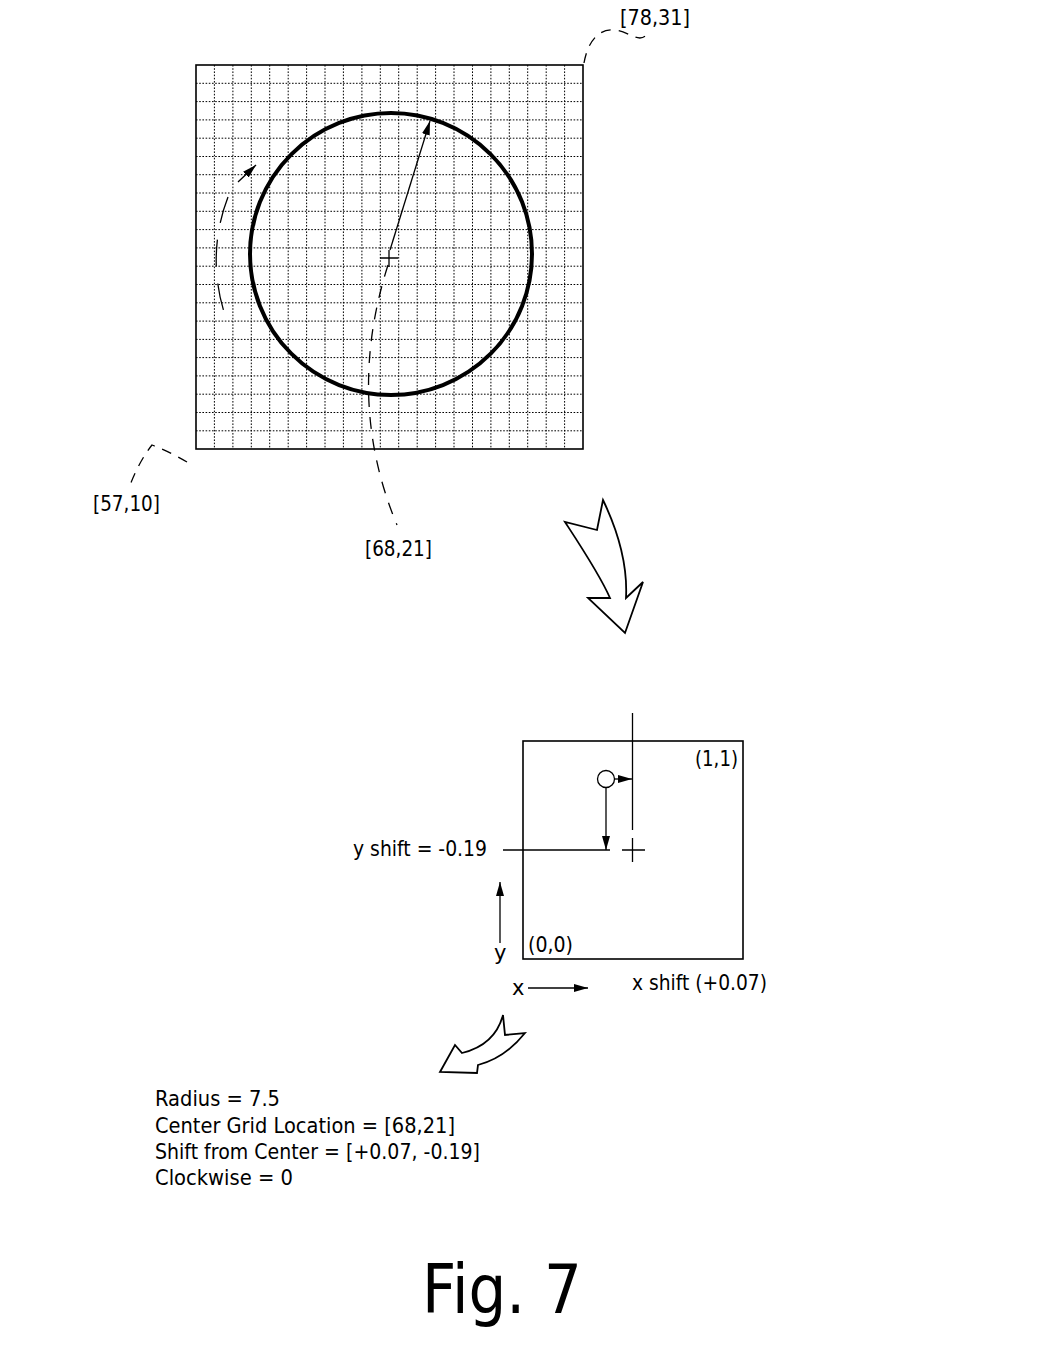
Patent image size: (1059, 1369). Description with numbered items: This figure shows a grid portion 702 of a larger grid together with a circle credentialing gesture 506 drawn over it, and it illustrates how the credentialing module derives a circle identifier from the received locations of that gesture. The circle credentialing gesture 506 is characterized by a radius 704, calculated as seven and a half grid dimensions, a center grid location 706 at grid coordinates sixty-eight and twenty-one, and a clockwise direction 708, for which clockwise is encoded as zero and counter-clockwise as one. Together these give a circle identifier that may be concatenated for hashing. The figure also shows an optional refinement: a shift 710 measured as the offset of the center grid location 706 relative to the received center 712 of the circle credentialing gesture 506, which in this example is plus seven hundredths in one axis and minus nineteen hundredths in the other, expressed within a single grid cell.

The circle credentialing gesture 506 is at (473, 239).
The grid portion 702 is at (456, 257).
The radius 704 is at (280, 128).
The center grid location 706 is at (249, 156).
The clockwise direction 708 is at (454, 553).
The shift 710 is at (586, 850).
The received center 712 is at (536, 776).